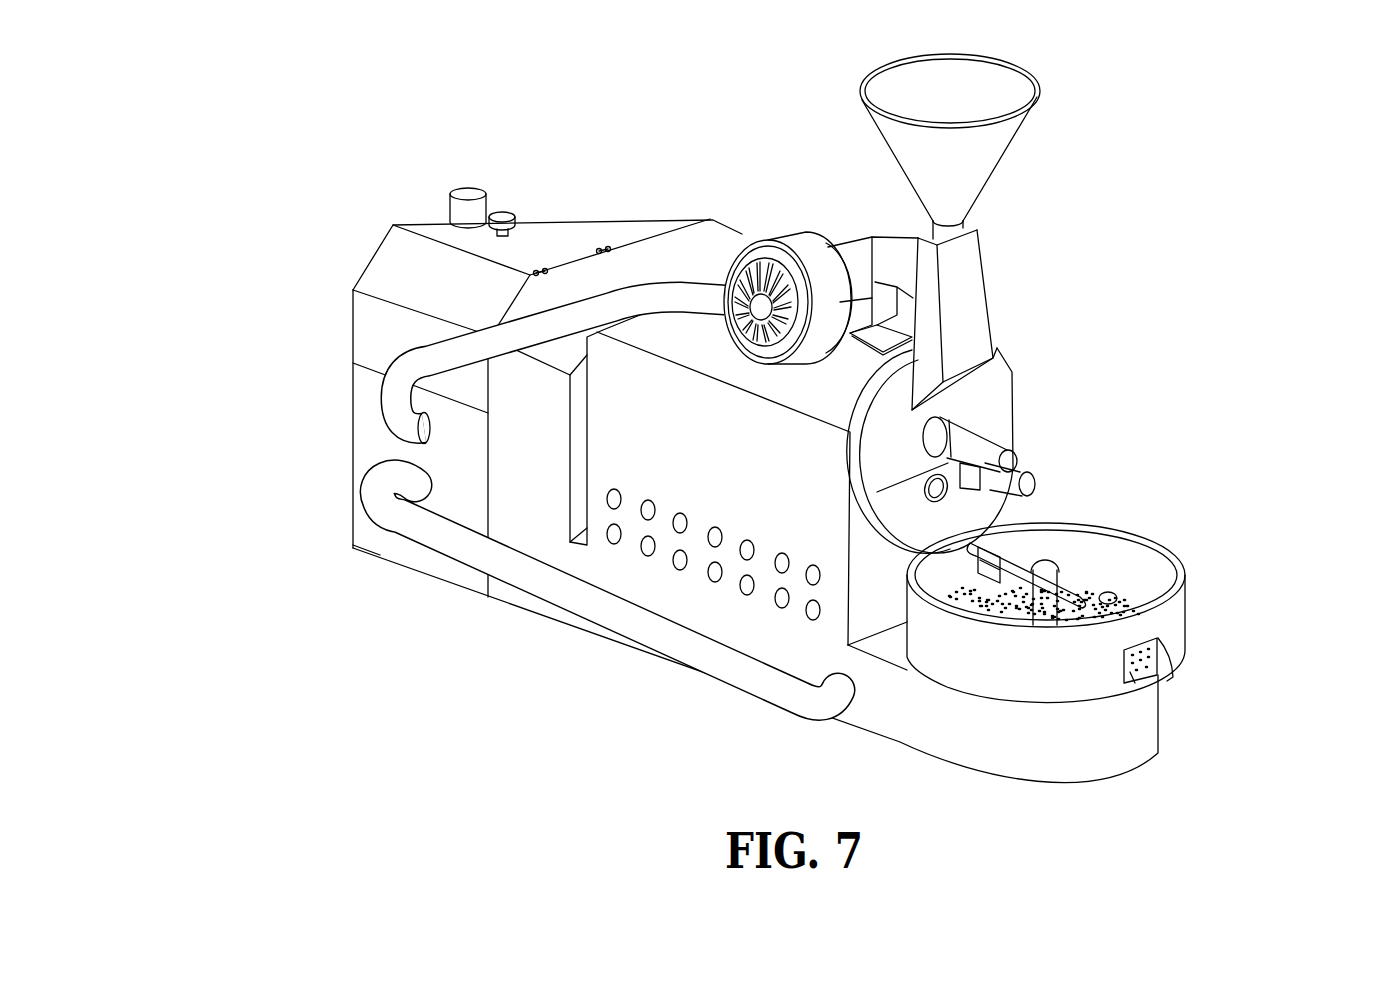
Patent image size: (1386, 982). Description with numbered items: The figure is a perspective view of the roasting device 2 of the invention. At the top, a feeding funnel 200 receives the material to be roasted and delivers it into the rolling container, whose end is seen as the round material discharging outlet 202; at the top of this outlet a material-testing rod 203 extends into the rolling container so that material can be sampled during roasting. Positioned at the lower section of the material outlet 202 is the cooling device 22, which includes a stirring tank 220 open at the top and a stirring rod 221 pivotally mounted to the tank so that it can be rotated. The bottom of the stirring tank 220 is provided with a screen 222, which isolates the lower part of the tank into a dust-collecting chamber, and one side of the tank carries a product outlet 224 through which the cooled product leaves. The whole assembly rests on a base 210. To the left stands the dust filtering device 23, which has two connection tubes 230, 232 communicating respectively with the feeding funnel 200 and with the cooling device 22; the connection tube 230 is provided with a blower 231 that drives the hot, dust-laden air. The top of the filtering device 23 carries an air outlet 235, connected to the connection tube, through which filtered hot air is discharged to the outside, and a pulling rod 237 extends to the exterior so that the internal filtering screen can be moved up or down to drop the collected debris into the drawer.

The roasting device 2 is at (1203, 253).
The feeding funnel 200 is at (977, 157).
The material discharging outlet 202 is at (893, 493).
The material-testing rod 203 is at (993, 447).
The base 210 is at (537, 473).
The cooling device 22 is at (1121, 582).
The stirring tank 220 is at (1180, 600).
The stirring rod 221 is at (1023, 557).
The screen 222 is at (1122, 593).
The product outlet 224 is at (1183, 667).
The dust filtering device 23 is at (328, 325).
The connection tube 230 is at (633, 303).
The blower 231 is at (775, 238).
The connection tube 232 is at (560, 593).
The air outlet 235 is at (467, 200).
The pulling rod 237 is at (503, 218).